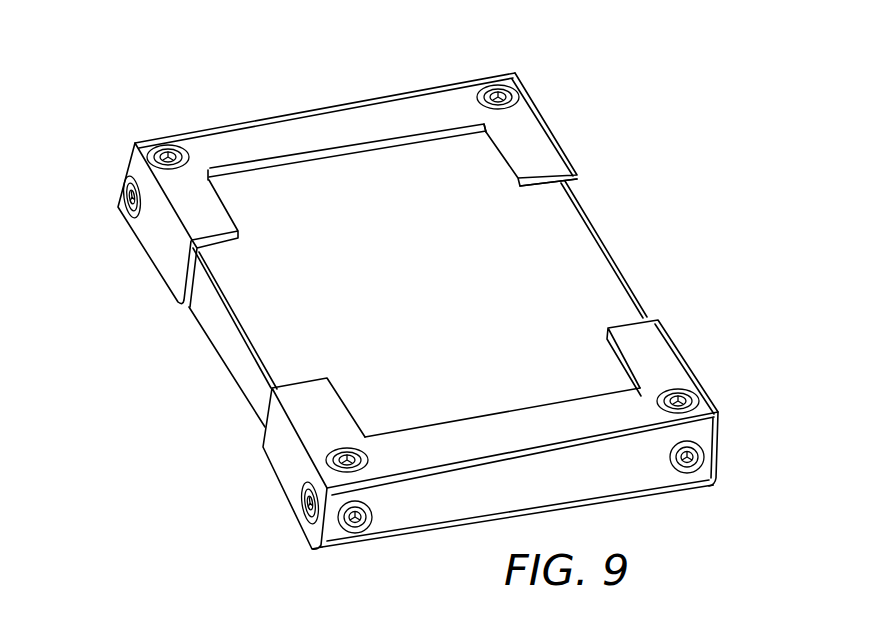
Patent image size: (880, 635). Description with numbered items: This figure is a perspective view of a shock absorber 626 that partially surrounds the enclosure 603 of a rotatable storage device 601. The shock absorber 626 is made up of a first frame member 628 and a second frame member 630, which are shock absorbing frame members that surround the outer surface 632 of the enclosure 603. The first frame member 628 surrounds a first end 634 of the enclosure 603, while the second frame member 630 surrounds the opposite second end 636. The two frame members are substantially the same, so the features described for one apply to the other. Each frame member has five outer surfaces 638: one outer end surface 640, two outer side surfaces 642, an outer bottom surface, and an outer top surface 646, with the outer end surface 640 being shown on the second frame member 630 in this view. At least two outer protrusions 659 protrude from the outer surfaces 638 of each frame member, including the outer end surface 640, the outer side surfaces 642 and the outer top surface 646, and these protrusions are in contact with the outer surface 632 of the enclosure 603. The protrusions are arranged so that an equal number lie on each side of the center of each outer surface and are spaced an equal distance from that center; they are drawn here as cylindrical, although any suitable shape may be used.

The rotatable storage device 601 is at (581, 210).
The enclosure 603 is at (204, 332).
The shock absorber 626 is at (738, 187).
The first frame member 628 is at (512, 92).
The second frame member 630 is at (676, 347).
The outer surface 632 is at (588, 256).
The first end 634 is at (273, 118).
The second end 636 is at (620, 503).
The outer surfaces 638 is at (137, 230).
The outer end surface 640 is at (647, 477).
The outer side surfaces 642 is at (163, 243).
The outer top surface 646 is at (231, 143).
The outer protrusions 659 is at (126, 185).